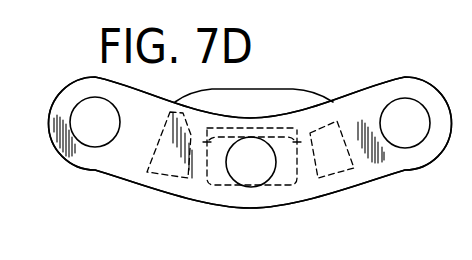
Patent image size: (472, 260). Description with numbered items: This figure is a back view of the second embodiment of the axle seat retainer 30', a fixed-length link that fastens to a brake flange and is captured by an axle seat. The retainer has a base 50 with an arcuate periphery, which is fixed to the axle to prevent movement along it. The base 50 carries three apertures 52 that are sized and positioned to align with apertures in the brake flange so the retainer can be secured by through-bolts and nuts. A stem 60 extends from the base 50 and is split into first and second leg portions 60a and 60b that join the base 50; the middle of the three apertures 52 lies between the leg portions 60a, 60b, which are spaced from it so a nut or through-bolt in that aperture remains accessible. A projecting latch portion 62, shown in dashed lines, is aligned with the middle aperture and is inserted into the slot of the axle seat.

The axle seat retainer 30' is at (250, 109).
The base 50 is at (82, 84).
The apertures 52 is at (113, 141).
The stem 60 is at (248, 88).
The first leg portion 60a is at (341, 178).
The second leg portion 60b is at (147, 178).
The latch portion 62 is at (281, 189).